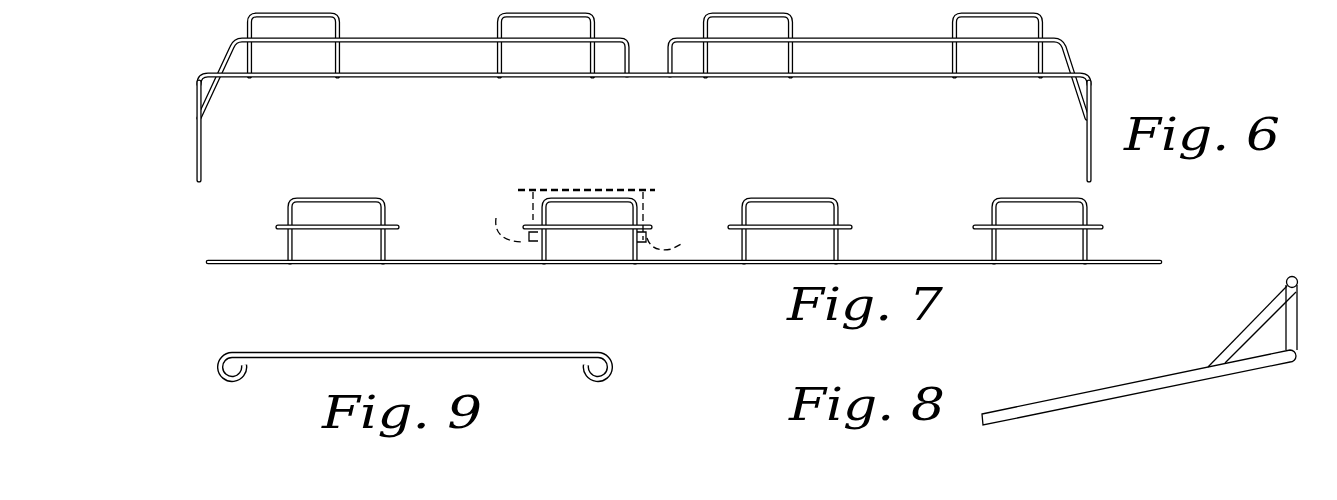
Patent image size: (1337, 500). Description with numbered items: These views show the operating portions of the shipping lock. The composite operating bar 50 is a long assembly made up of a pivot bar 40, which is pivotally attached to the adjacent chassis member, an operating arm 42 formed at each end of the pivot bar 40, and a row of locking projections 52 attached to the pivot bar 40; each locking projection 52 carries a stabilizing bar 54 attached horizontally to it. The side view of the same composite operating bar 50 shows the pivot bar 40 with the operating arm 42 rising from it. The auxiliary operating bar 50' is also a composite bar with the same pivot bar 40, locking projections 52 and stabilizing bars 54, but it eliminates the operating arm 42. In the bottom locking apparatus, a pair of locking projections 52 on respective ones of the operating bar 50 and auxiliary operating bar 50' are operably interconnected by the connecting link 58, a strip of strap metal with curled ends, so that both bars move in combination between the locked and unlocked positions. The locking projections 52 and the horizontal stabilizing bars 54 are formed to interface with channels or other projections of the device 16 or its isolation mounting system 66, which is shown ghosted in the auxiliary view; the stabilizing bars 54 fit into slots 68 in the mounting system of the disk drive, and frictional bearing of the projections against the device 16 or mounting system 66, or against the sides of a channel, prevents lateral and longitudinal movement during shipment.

In FIG. 7, the device 16 is at (650, 188).
In FIG. 6, the pivot bar 40 is at (650, 77).
In FIG. 7, the pivot bar 40 is at (478, 265).
In FIG. 8, the pivot bar 40 is at (1282, 367).
In FIG. 6, the operating arm 42 is at (200, 168).
In FIG. 8, the operating arm 42 is at (1197, 372).
In FIG. 6, the composite operating bar 50 is at (684, 97).
In FIG. 8, the composite operating bar 50 is at (1140, 351).
In FIG. 7, the auxiliary operating bar 50' is at (707, 224).
In FIG. 6, the locking projections 52 is at (340, 58).
In FIG. 7, the locking projections 52 is at (385, 202).
In FIG. 6, the stabilizing bars 54 is at (402, 43).
In FIG. 7, the stabilizing bars 54 is at (397, 227).
In FIG. 9, the connecting link 58 is at (612, 358).
In FIG. 7, the isolation mounting system 66 is at (646, 213).
In FIG. 7, the slots 68 is at (603, 222).